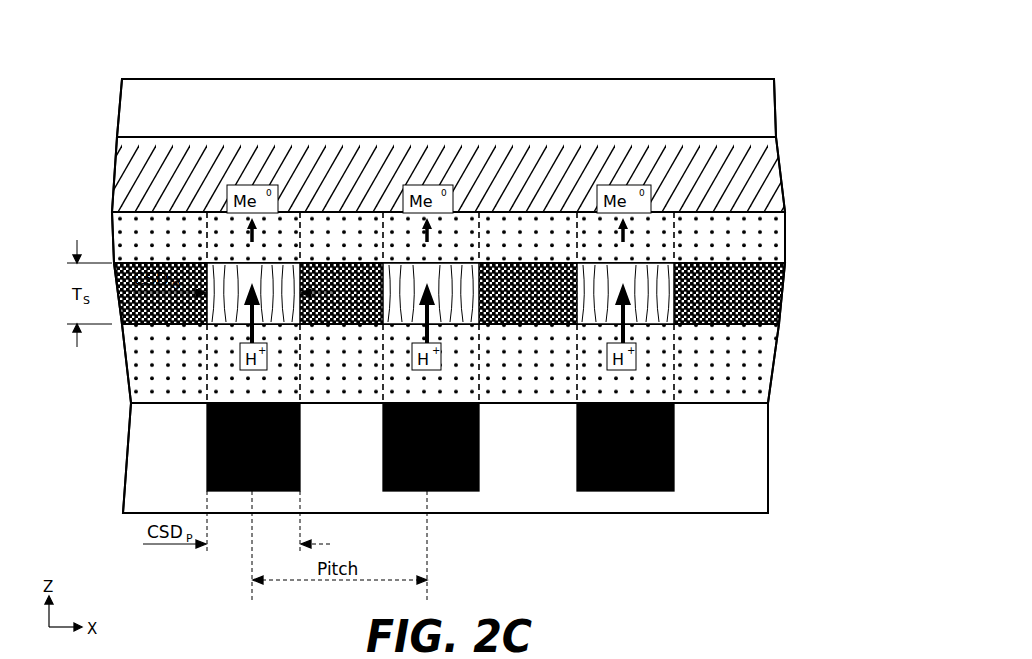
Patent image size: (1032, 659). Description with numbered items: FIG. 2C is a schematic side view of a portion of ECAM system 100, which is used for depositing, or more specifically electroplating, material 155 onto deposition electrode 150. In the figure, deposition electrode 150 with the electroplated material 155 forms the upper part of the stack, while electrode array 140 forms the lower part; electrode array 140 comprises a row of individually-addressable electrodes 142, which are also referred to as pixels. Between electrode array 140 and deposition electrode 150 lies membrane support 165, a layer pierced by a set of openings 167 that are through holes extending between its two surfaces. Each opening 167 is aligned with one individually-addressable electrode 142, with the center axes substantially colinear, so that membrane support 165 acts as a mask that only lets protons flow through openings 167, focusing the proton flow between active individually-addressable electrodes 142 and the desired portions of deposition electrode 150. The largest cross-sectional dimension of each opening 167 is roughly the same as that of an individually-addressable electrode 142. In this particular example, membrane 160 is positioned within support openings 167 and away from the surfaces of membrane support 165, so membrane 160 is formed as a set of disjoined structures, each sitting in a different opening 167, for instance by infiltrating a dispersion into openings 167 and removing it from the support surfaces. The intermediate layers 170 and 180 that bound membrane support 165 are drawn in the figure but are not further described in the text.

The ECAM system 100 is at (92, 63).
The electrode array 140 is at (753, 476).
The individually-addressable electrode 142 is at (676, 433).
The deposition electrode 150 is at (755, 107).
The material 155 is at (738, 173).
The membrane 160 is at (280, 265).
The membrane support 165 is at (783, 300).
The opening 167 is at (234, 270).
The lower dotted layer 170 is at (745, 360).
The upper dotted layer 180 is at (758, 230).